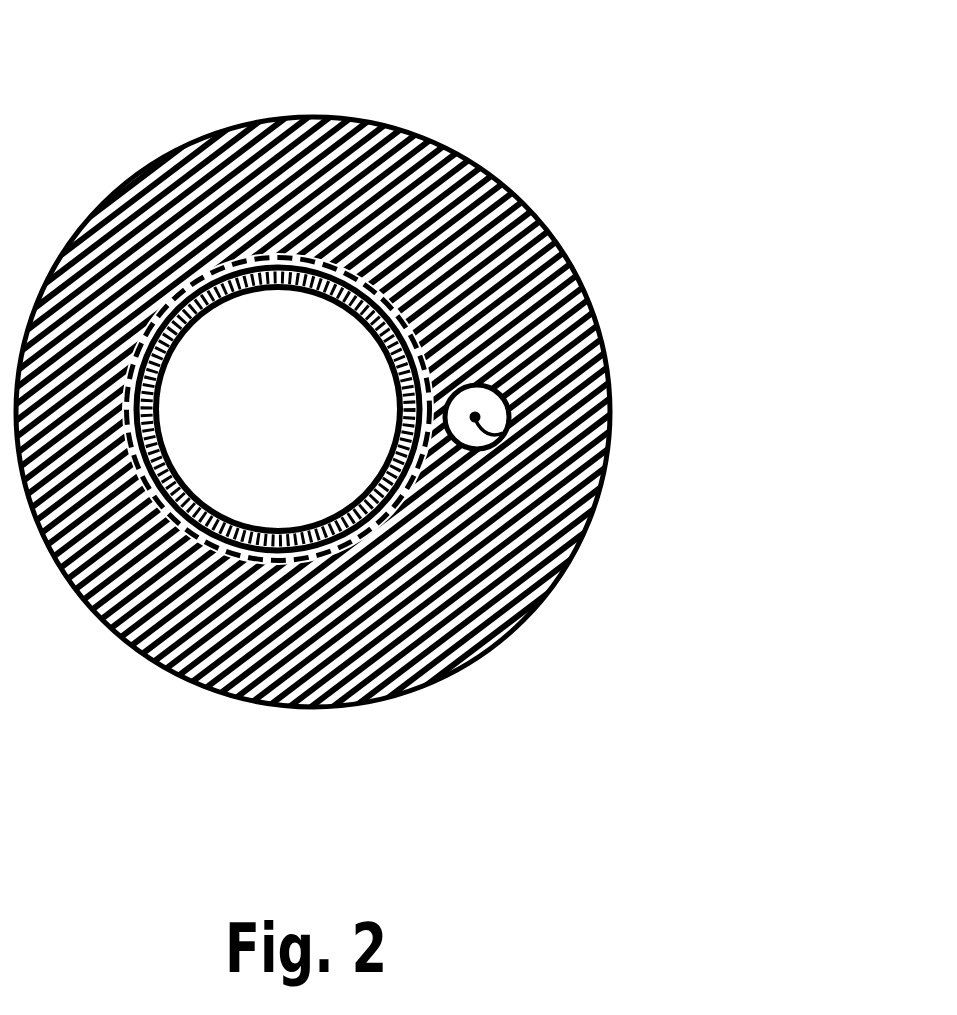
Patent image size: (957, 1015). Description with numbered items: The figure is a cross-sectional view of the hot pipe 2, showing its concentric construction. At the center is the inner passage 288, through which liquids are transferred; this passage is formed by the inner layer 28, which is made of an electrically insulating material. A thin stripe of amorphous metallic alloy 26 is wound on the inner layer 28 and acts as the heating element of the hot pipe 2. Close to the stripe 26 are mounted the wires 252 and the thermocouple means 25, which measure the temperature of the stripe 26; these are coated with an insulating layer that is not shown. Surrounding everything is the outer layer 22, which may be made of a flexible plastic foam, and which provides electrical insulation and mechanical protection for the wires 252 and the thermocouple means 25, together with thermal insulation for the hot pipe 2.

The hot pipe 2 is at (478, 464).
The outer layer 22 is at (481, 163).
The thermocouple means 25 is at (509, 389).
The wires 252 is at (503, 433).
The stripe of amorphous metallic alloy 26 is at (368, 530).
The inner layer 28 is at (256, 560).
The inner passage 288 is at (268, 328).